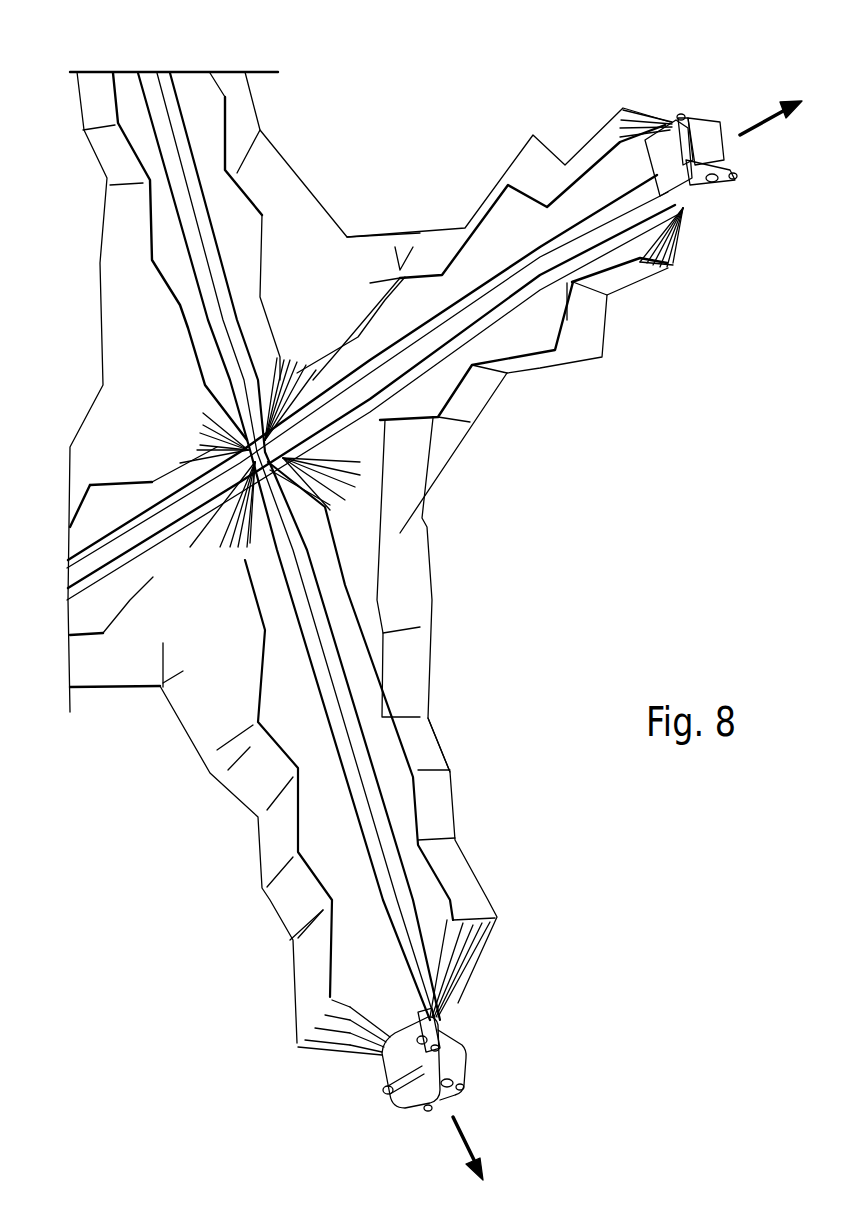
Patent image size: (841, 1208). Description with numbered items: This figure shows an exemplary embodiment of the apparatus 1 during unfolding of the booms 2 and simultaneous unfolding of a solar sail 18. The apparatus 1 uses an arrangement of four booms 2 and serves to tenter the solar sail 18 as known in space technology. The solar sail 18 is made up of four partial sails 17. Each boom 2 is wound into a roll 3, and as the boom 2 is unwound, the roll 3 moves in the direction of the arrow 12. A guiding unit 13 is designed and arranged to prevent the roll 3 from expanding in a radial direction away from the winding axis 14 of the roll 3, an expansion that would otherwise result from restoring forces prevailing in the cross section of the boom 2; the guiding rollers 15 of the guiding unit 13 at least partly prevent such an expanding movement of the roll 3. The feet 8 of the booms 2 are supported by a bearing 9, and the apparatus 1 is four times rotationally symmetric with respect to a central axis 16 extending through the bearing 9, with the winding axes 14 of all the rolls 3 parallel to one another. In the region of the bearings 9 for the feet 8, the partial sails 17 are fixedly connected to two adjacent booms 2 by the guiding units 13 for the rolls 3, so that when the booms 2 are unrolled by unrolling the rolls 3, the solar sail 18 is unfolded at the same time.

The apparatus 1 is at (369, 557).
The boom 2 is at (350, 513).
The roll 3 is at (518, 559).
The foot 8 is at (279, 427).
The bearing 9 is at (398, 514).
The arrow 12 is at (627, 595).
The guiding unit 13 is at (583, 675).
The winding axis 14 is at (583, 606).
The guiding roller 15 is at (575, 593).
The central axis 16 is at (489, 194).
The partial sail 17 is at (347, 508).
The solar sail 18 is at (485, 725).